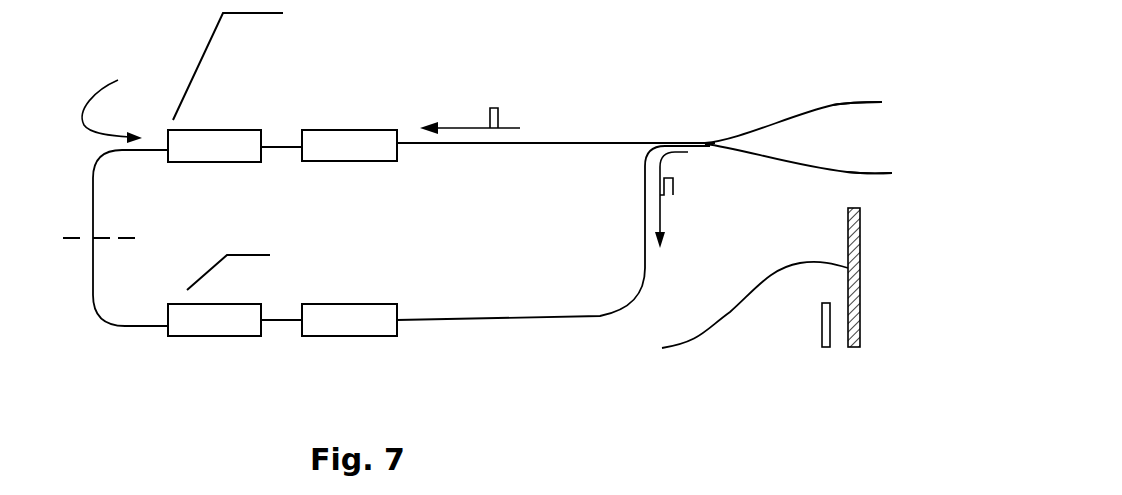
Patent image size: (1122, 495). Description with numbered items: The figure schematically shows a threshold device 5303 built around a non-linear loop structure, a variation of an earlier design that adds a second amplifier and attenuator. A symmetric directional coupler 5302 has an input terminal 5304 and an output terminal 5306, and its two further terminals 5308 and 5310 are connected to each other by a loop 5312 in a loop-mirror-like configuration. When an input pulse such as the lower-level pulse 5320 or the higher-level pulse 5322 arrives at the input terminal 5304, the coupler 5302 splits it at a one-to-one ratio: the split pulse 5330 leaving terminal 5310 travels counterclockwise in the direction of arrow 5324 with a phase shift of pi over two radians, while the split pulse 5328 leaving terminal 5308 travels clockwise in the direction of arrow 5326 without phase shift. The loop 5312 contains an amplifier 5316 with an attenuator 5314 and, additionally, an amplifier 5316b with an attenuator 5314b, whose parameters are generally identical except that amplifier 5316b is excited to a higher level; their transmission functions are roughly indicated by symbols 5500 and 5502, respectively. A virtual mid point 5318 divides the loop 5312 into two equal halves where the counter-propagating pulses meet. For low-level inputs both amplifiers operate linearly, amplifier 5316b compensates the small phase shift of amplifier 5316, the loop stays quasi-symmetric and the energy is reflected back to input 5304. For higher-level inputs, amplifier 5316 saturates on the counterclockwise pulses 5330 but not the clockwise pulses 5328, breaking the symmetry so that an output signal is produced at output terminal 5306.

The symmetric directional coupler 5302 is at (727, 146).
The device 5303 is at (114, 100).
The input terminal 5304 is at (843, 175).
The output terminal 5306 is at (833, 105).
The terminal 5308 is at (642, 156).
The terminal 5310 is at (681, 143).
The loop 5312 is at (645, 265).
The attenuator 5314 is at (383, 336).
The attenuator 5314b is at (382, 161).
The amplifier 5316 is at (237, 336).
The amplifier 5316b is at (240, 162).
The virtual mid point 5318 is at (110, 238).
The input pulse 5320 is at (818, 312).
The pulse 5322 is at (664, 348).
The arrow 5324 is at (482, 128).
The arrow 5326 is at (662, 208).
The split pulse 5328 is at (673, 187).
The split pulse 5330 is at (489, 108).
The symbol 5500 is at (223, 263).
The symbol 5502 is at (207, 57).